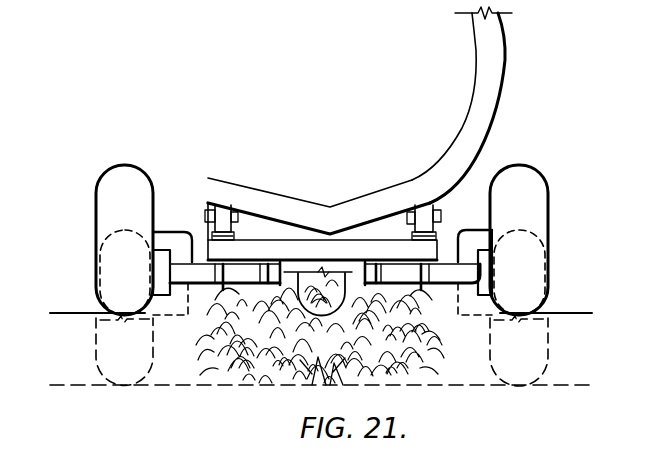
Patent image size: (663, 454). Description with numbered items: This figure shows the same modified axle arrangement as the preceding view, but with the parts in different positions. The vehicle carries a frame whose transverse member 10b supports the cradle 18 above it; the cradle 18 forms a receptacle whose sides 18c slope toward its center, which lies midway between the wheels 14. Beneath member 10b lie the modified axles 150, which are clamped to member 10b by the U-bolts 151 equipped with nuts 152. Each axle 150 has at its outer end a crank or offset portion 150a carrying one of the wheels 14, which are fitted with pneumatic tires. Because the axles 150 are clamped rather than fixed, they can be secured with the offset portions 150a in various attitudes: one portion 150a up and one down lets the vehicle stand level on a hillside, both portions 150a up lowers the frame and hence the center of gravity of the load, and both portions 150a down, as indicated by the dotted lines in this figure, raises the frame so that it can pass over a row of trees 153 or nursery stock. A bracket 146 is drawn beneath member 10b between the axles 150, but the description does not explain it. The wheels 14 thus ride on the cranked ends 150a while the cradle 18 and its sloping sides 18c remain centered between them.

The wheels 14 is at (101, 267).
The crank or offset portion 150a is at (168, 232).
The axles 150 is at (202, 284).
The U-bolts 151 is at (258, 286).
The nuts 152 is at (413, 212).
The frame member 10b is at (285, 243).
The cradle 18 is at (350, 198).
The sides 18c is at (493, 70).
The bracket 146 is at (290, 278).
The trees 153 is at (420, 356).